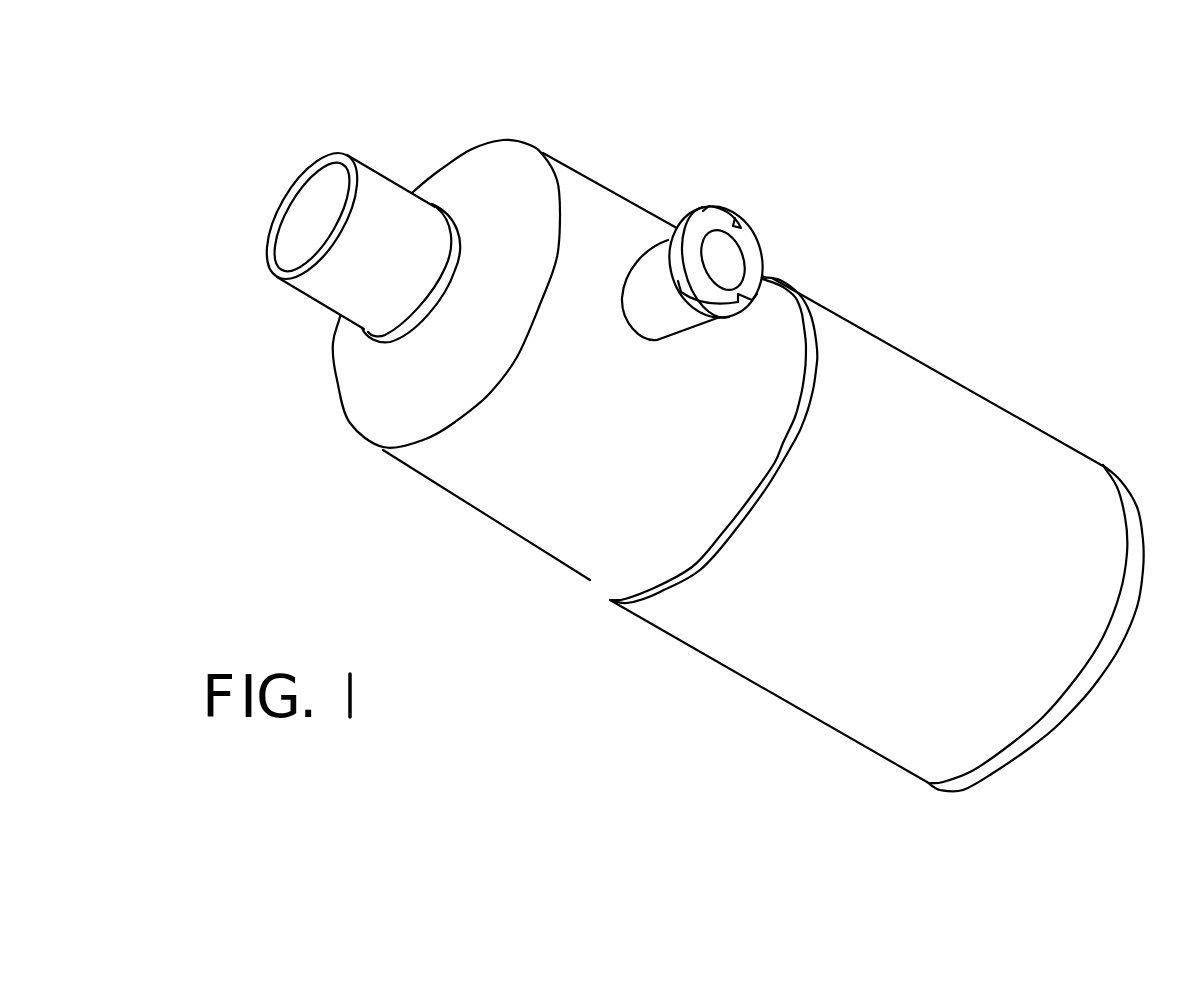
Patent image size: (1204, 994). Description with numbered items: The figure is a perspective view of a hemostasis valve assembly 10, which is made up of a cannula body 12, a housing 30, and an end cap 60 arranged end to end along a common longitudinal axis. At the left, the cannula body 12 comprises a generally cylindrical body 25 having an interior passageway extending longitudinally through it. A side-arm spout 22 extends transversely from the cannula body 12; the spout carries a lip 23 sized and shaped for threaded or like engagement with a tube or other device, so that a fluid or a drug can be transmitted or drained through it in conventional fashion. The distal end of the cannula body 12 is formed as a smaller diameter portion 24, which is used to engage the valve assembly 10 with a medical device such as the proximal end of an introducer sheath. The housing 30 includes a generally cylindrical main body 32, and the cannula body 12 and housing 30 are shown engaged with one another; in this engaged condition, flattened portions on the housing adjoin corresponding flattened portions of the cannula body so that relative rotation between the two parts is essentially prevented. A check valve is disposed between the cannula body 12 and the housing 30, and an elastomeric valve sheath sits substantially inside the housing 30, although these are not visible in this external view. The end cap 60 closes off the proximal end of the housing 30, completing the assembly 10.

The hemostasis valve assembly 10 is at (726, 433).
The cannula body 12 is at (562, 155).
The side-arm spout 22 is at (654, 240).
The lip 23 is at (699, 208).
The smaller diameter portion 24 is at (372, 170).
The cylindrical body 25 is at (482, 515).
The housing 30 is at (942, 365).
The main body 32 is at (758, 688).
The end cap 60 is at (1128, 477).